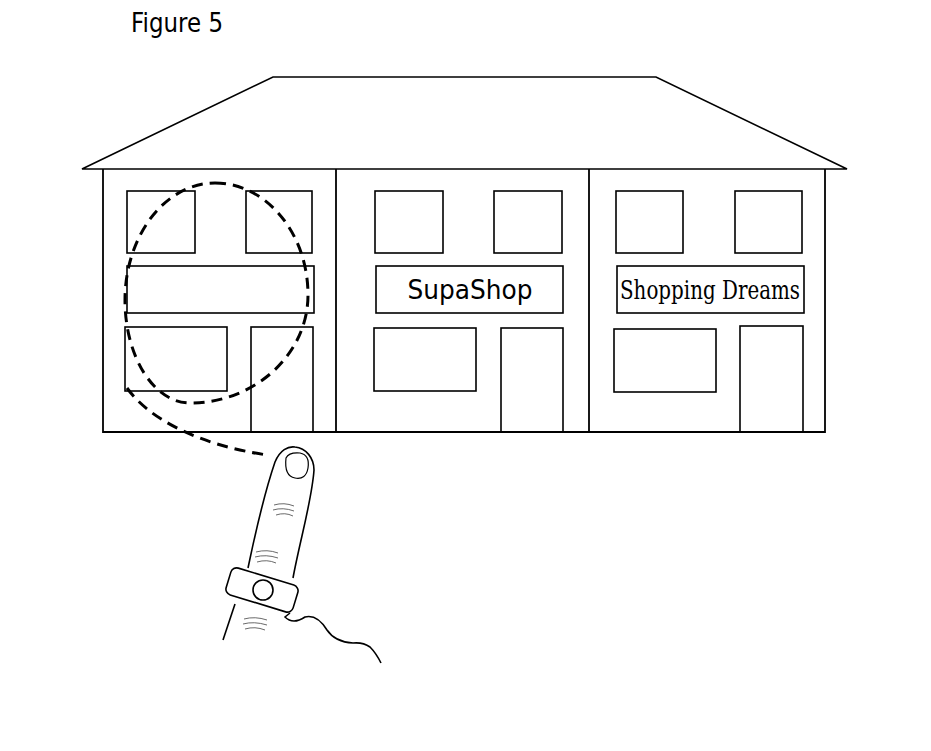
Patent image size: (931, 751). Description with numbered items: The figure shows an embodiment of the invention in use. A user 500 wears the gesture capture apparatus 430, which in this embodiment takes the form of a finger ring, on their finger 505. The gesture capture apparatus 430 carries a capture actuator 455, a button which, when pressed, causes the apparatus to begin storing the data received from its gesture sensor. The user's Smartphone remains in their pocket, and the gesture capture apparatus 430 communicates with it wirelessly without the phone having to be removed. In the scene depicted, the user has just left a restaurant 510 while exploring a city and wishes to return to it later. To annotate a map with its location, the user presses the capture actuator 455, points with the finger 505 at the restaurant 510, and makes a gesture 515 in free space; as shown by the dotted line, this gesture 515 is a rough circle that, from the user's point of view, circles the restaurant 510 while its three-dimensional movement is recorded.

The user 500 is at (272, 555).
The gesture capture apparatus 430 is at (225, 561).
The capture actuator 455 is at (263, 590).
The finger 505 is at (293, 463).
The restaurant 510 is at (124, 272).
The gesture 515 is at (123, 311).